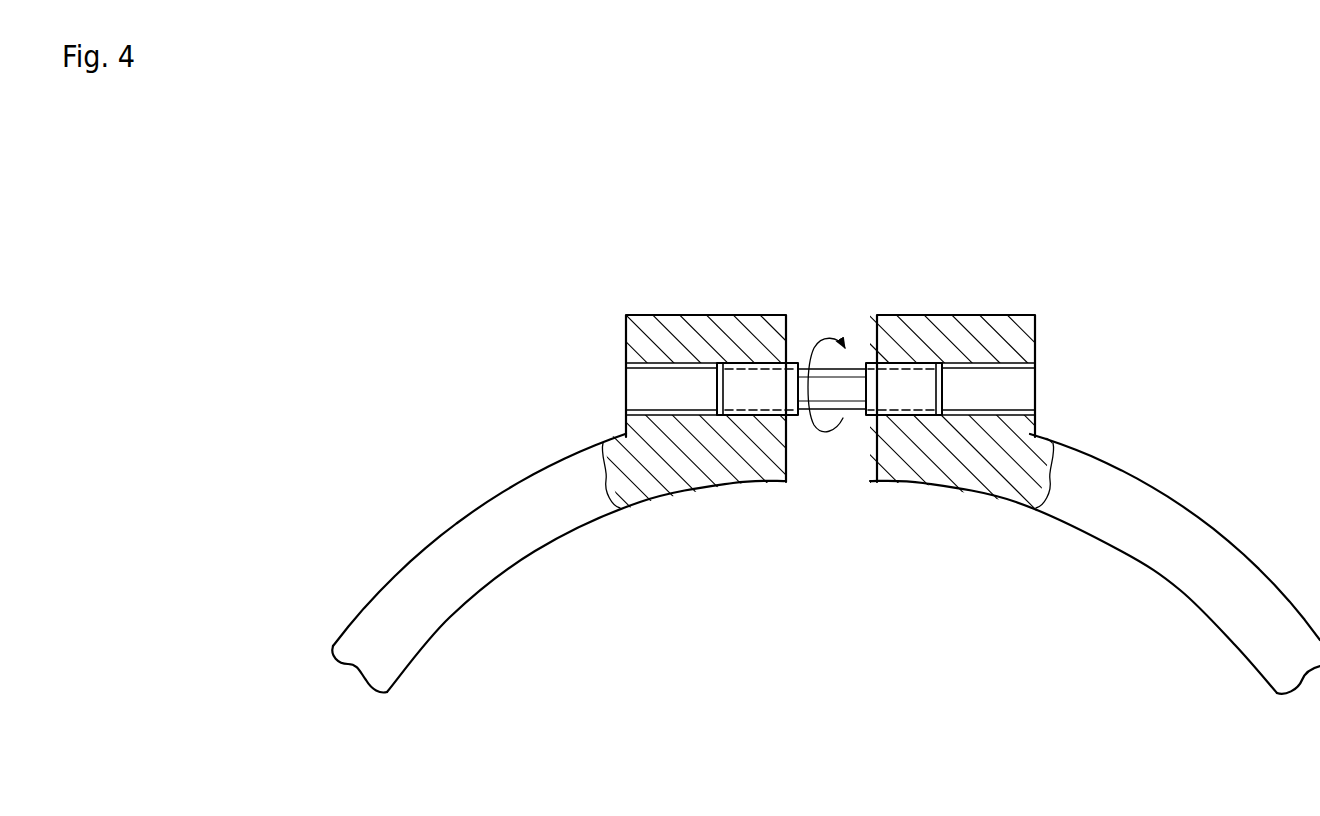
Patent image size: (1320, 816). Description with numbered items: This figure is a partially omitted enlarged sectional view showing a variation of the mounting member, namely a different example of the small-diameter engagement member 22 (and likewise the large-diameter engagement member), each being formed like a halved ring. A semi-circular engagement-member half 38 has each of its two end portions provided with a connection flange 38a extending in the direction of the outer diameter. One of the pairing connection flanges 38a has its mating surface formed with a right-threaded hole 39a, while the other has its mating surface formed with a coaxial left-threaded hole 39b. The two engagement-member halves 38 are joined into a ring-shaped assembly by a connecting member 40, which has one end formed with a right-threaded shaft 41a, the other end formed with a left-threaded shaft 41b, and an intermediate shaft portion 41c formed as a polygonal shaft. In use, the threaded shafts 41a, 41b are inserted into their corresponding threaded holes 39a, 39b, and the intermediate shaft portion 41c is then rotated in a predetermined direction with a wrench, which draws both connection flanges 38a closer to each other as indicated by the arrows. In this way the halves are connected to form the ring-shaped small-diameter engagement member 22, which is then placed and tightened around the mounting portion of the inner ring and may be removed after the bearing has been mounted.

The small-diameter engagement member 22 is at (1174, 480).
The engagement-member half 38 is at (535, 523).
The connection flange 38a is at (778, 289).
The right-threaded hole 39a is at (655, 372).
The left-threaded hole 39b is at (1006, 372).
The connecting member 40 is at (808, 358).
The right-threaded shaft 41a is at (733, 400).
The left-threaded shaft 41b is at (903, 398).
The intermediate shaft portion 41c is at (809, 405).